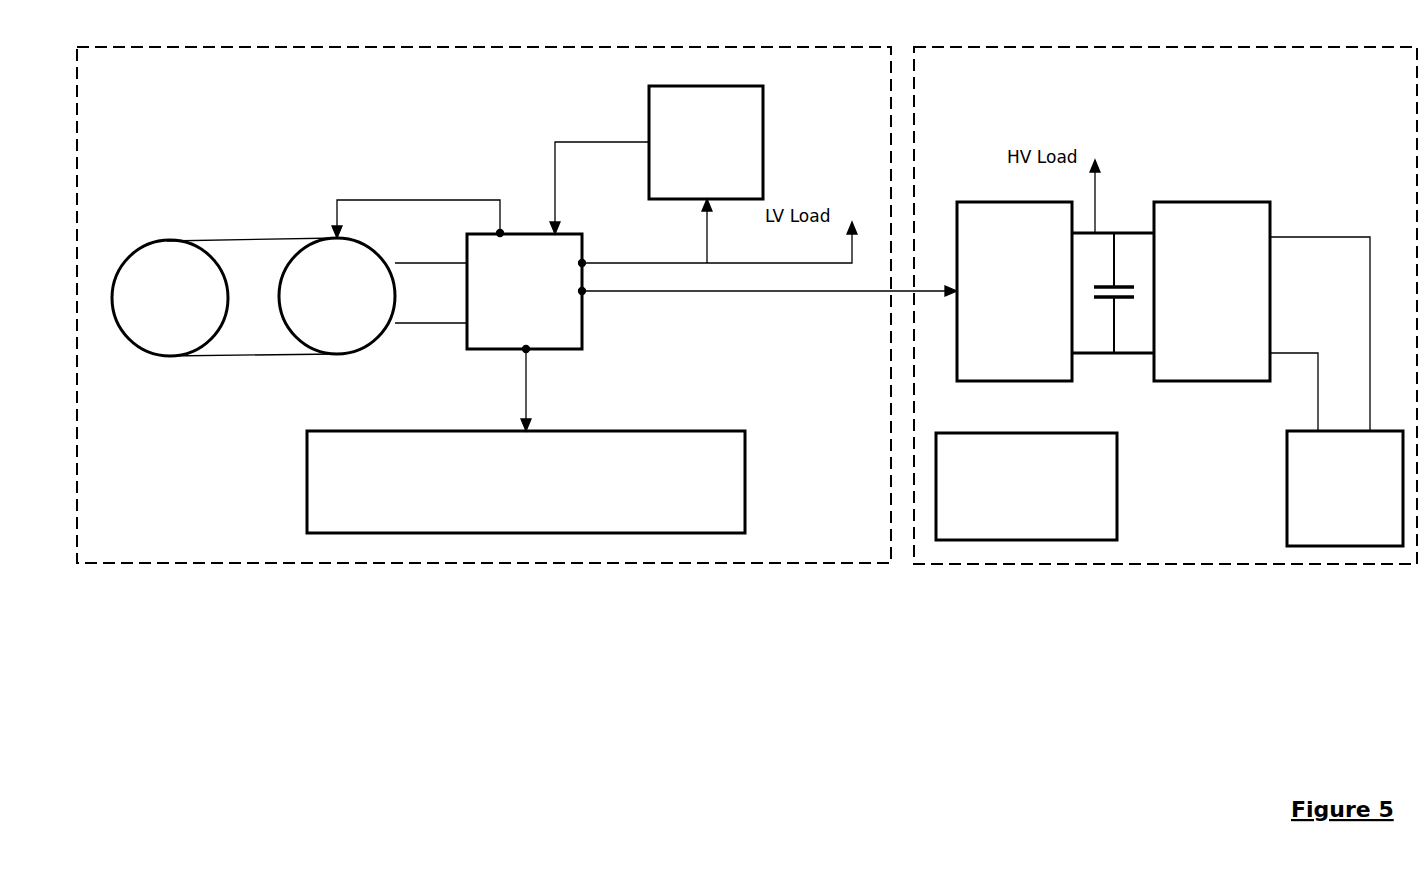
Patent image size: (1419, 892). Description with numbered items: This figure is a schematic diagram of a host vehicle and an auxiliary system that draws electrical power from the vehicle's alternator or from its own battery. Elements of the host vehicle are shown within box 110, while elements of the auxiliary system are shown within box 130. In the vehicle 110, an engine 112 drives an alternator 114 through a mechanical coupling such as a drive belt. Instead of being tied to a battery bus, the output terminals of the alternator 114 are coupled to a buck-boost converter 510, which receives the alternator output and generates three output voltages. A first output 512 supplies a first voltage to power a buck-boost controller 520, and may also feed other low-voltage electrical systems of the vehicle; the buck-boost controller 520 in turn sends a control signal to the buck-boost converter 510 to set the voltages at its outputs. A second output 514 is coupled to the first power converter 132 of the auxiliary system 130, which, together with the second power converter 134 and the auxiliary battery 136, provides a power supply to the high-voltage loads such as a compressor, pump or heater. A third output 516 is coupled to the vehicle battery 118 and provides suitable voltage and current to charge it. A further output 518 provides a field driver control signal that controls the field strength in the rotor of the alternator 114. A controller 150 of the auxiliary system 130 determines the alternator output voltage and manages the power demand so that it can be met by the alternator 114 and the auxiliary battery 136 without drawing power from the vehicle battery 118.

The vehicle 110 is at (484, 305).
The engine 112 is at (170, 298).
The alternator 114 is at (281, 297).
The vehicle battery 118 is at (526, 482).
The auxiliary system 130 is at (1165, 305).
The first power converter 132 is at (1014, 291).
The second power converter 134 is at (1212, 291).
The auxiliary battery 136 is at (1345, 488).
The controller 150 is at (1026, 486).
The buck-boost converter 510 is at (524, 291).
The first output 512 is at (582, 263).
The second output 514 is at (582, 291).
The third output 516 is at (526, 349).
The further output 518 is at (500, 233).
The buck-boost controller 520 is at (706, 142).